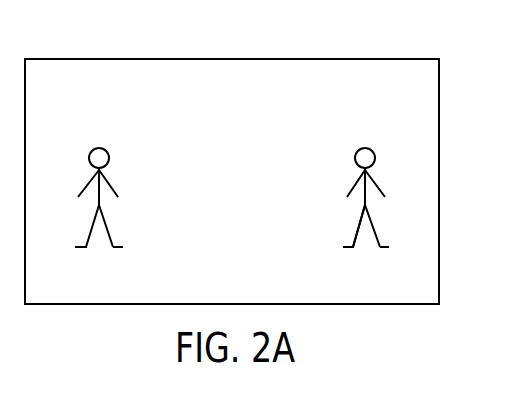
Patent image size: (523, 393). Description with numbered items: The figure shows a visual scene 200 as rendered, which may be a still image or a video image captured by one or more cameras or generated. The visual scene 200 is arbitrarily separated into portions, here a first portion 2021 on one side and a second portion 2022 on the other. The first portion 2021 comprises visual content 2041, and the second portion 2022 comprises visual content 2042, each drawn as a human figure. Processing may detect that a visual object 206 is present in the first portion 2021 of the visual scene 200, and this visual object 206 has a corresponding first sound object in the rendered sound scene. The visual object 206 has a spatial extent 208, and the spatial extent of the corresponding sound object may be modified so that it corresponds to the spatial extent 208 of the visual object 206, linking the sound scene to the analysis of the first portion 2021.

The visual scene 200 is at (255, 38).
The first portion 2021 is at (365, 148).
The second portion 2022 is at (118, 128).
The visual content 2041 is at (392, 175).
The visual content 2042 is at (125, 202).
The visual object 206 is at (335, 240).
The spatial extent 208 is at (389, 247).